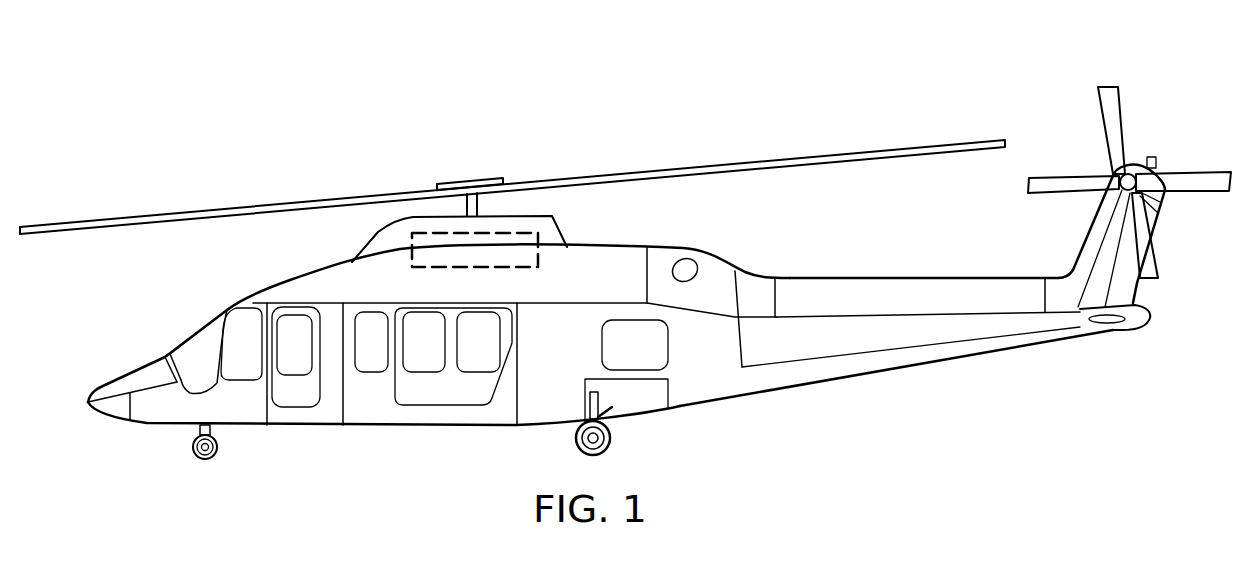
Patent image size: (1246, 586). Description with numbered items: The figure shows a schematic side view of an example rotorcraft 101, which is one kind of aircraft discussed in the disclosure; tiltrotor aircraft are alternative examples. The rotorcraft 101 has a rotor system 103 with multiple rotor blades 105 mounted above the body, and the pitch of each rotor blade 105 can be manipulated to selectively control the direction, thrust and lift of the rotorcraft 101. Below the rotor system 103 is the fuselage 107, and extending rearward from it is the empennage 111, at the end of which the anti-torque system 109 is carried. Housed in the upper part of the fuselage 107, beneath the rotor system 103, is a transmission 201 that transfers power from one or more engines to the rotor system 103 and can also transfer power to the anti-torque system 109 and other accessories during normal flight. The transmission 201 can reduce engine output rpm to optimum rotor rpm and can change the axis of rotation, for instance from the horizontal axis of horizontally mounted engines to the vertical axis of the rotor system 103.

The rotorcraft 101 is at (219, 78).
The rotor system 103 is at (487, 156).
The rotor blade 105 is at (207, 210).
The fuselage 107 is at (378, 425).
The anti-torque system 109 is at (1156, 130).
The empennage 111 is at (955, 358).
The transmission 201 is at (448, 232).